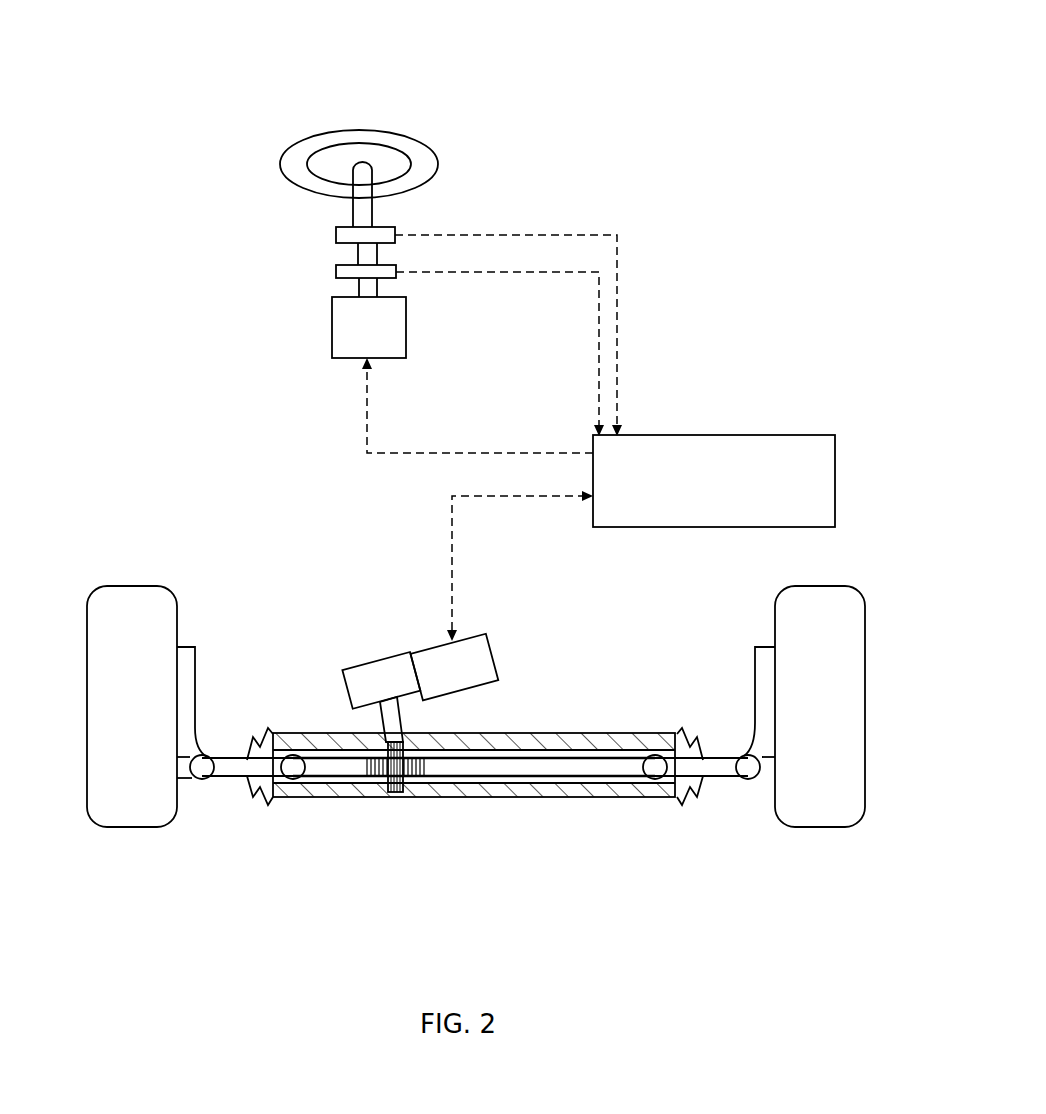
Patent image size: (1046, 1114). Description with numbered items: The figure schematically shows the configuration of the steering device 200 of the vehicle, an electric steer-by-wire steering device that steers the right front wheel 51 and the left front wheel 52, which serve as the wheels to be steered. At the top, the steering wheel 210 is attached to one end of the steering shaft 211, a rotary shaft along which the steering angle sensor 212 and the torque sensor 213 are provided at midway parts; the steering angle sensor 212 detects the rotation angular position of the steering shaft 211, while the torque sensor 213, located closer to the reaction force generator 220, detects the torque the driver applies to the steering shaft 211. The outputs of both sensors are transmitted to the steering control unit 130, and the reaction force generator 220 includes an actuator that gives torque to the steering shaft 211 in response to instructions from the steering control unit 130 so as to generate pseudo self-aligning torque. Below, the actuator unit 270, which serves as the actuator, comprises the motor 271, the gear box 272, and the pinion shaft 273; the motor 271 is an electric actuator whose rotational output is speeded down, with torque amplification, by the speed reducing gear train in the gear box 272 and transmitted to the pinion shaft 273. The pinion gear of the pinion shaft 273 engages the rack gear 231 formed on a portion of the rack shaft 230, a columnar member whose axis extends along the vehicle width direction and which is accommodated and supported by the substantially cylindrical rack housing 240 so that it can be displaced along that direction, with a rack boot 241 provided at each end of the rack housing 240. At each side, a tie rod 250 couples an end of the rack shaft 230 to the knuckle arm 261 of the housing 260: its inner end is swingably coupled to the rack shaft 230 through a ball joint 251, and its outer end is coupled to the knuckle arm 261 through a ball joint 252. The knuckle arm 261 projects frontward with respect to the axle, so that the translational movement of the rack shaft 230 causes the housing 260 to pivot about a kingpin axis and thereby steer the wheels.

The steering device 200 is at (215, 172).
The steering wheel 210 is at (318, 135).
The steering shaft 211 is at (368, 178).
The steering angle sensor 212 is at (335, 235).
The torque sensor 213 is at (337, 270).
The reaction force generator 220 is at (332, 330).
The steering control unit 130 is at (835, 441).
The actuator unit 270 is at (499, 590).
The motor 271 is at (477, 648).
The gear box 272 is at (353, 692).
The pinion shaft 273 is at (397, 797).
The rack shaft 230 is at (487, 775).
The rack gear 231 is at (421, 797).
The rack housing 240 is at (525, 793).
The rack boot 241 is at (267, 797).
The tie rod 250 is at (709, 768).
The ball joint 251 is at (655, 767).
The ball joint 252 is at (750, 775).
The housing 260 is at (183, 695).
The knuckle arm 261 is at (185, 760).
The right front wheel 51 is at (120, 825).
The left front wheel 52 is at (833, 825).